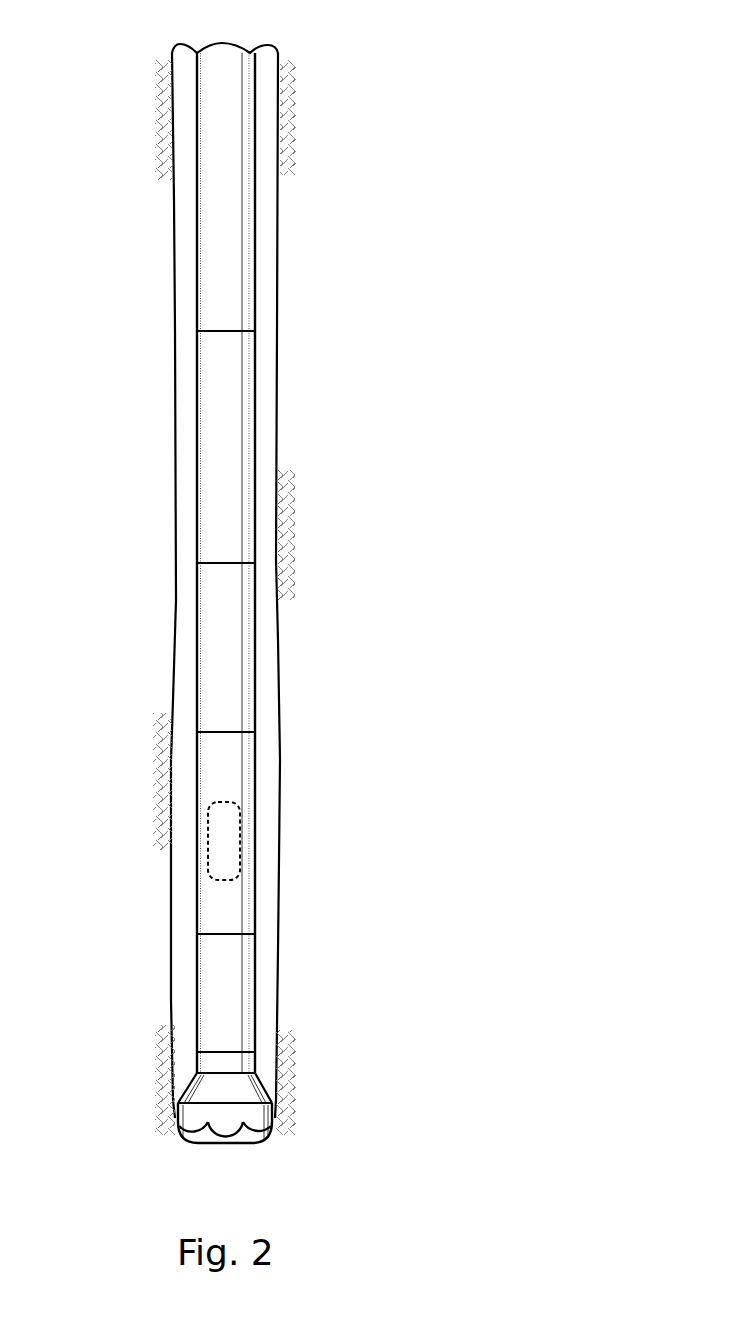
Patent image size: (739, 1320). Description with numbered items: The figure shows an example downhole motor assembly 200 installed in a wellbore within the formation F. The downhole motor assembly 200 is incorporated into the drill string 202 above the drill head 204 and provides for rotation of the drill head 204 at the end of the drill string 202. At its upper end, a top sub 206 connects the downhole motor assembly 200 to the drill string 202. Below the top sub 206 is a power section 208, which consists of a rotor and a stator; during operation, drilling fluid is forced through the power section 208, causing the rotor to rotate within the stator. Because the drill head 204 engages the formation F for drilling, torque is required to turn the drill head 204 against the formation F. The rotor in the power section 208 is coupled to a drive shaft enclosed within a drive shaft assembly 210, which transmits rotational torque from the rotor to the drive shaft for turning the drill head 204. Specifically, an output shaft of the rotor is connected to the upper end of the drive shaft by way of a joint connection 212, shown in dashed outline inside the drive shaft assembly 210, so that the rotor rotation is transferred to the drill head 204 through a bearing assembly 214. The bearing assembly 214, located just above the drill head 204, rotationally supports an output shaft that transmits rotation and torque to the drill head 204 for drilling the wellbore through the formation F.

The downhole motor assembly 200 is at (497, 58).
The drill string 202 is at (197, 230).
The drill head 204 is at (268, 1089).
The top sub 206 is at (195, 433).
The power section 208 is at (258, 640).
The drive shaft assembly 210 is at (258, 767).
The joint connection 212 is at (240, 843).
The bearing assembly 214 is at (256, 979).
The formation F is at (68, 846).